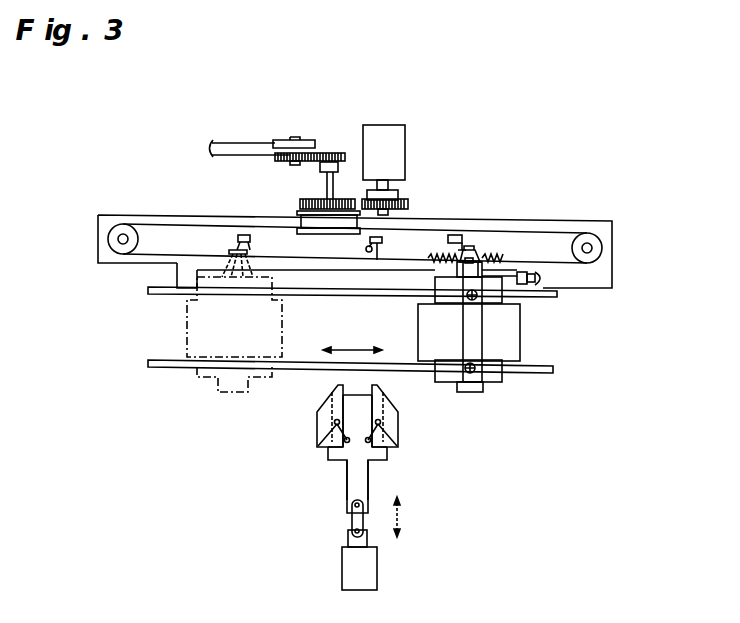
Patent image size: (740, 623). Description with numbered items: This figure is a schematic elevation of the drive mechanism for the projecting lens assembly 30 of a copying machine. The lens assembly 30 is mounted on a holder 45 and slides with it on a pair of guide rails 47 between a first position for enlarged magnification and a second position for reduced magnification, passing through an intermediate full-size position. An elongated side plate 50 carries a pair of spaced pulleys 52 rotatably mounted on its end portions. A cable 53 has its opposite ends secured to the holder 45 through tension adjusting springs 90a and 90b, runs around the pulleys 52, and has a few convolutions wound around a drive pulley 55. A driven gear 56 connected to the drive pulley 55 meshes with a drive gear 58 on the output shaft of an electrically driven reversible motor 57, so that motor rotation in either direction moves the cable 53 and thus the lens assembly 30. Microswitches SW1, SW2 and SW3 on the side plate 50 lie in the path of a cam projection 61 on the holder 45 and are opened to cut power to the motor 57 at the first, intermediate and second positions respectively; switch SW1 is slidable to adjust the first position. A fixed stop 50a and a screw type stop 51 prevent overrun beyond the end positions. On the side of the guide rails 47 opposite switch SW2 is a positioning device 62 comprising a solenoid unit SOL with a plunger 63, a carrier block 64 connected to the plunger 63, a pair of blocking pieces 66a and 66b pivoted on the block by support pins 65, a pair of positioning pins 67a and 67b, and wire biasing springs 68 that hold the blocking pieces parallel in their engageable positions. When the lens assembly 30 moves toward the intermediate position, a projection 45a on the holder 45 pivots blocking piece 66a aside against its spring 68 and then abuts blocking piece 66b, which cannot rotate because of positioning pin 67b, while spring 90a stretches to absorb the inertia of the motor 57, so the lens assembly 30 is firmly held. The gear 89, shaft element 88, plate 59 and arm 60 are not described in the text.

The projecting lens assembly 30 is at (512, 330).
The holder 45 is at (503, 383).
The projection 45a is at (480, 391).
The guide rails 47 is at (558, 294).
The side plate 50 is at (612, 230).
The fixed stop 50a is at (173, 275).
The screw type stop 51 is at (543, 273).
The pulleys 52 is at (113, 238).
The cable 53 is at (563, 227).
The drive pulley 55 is at (312, 220).
The driven gear 56 is at (318, 200).
The reversible motor 57 is at (393, 127).
The drive gear 58 is at (405, 199).
The plate 59 is at (282, 140).
The arm 60 is at (215, 150).
The cam projection 61 is at (472, 250).
The positioning device 62 is at (340, 516).
The plunger 63 is at (367, 540).
The carrier block 64 is at (372, 490).
The support pins 65 is at (334, 423).
The blocking piece 66a is at (398, 423).
The blocking piece 66b is at (325, 405).
The positioning pin 67a is at (370, 480).
The positioning pin 67b is at (347, 457).
The biasing springs 68 is at (344, 442).
The shaft hub 88 is at (328, 153).
The gear 89 is at (302, 153).
The tension adjusting spring 90a is at (500, 257).
The tension adjusting spring 90b is at (452, 250).
The microswitch SW1 is at (455, 242).
The microswitch SW2 is at (378, 258).
The microswitch SW3 is at (240, 234).
The solenoid unit SOL is at (353, 572).